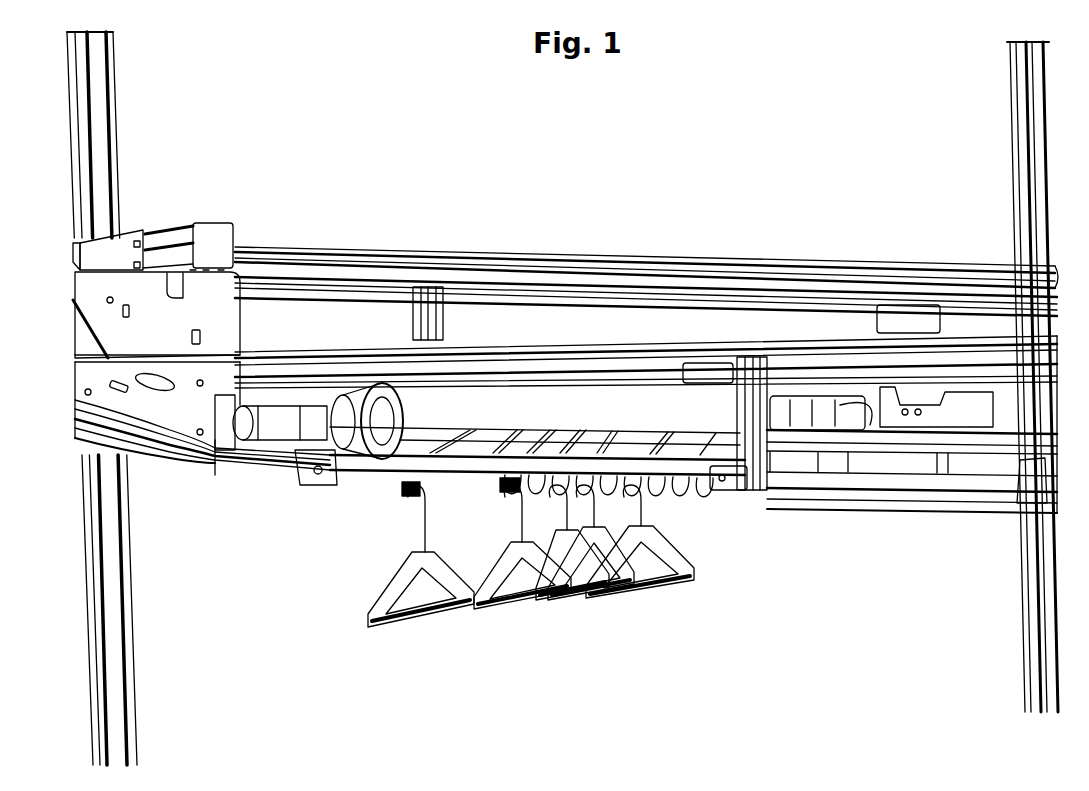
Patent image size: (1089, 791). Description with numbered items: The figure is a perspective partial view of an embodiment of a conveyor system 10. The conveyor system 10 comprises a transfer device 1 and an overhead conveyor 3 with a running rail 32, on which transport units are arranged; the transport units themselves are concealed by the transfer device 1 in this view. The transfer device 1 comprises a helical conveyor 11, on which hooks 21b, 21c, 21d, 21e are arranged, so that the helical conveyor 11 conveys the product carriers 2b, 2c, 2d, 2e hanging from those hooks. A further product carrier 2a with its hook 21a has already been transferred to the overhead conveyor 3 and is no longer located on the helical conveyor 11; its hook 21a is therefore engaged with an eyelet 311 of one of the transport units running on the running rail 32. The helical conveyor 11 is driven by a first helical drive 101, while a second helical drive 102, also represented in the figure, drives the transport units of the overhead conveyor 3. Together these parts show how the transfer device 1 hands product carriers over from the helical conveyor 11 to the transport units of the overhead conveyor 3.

The transfer device 1 is at (498, 506).
The product carrier 2a is at (470, 607).
The product carrier 2b is at (562, 592).
The product carrier 2c is at (592, 602).
The product carrier 2d is at (632, 597).
The product carrier 2e is at (695, 592).
The overhead conveyor 3 is at (246, 480).
The conveyor system 10 is at (264, 560).
The helical conveyor 11 is at (603, 495).
The hook 21a is at (420, 518).
The hook 21b is at (520, 515).
The hook 21c is at (522, 462).
The hook 21d is at (585, 462).
The hook 21e is at (641, 508).
The running rail 32 is at (207, 465).
The first helical drive 101 is at (677, 497).
The second helical drive 102 is at (440, 447).
The eyelet 311 is at (405, 495).